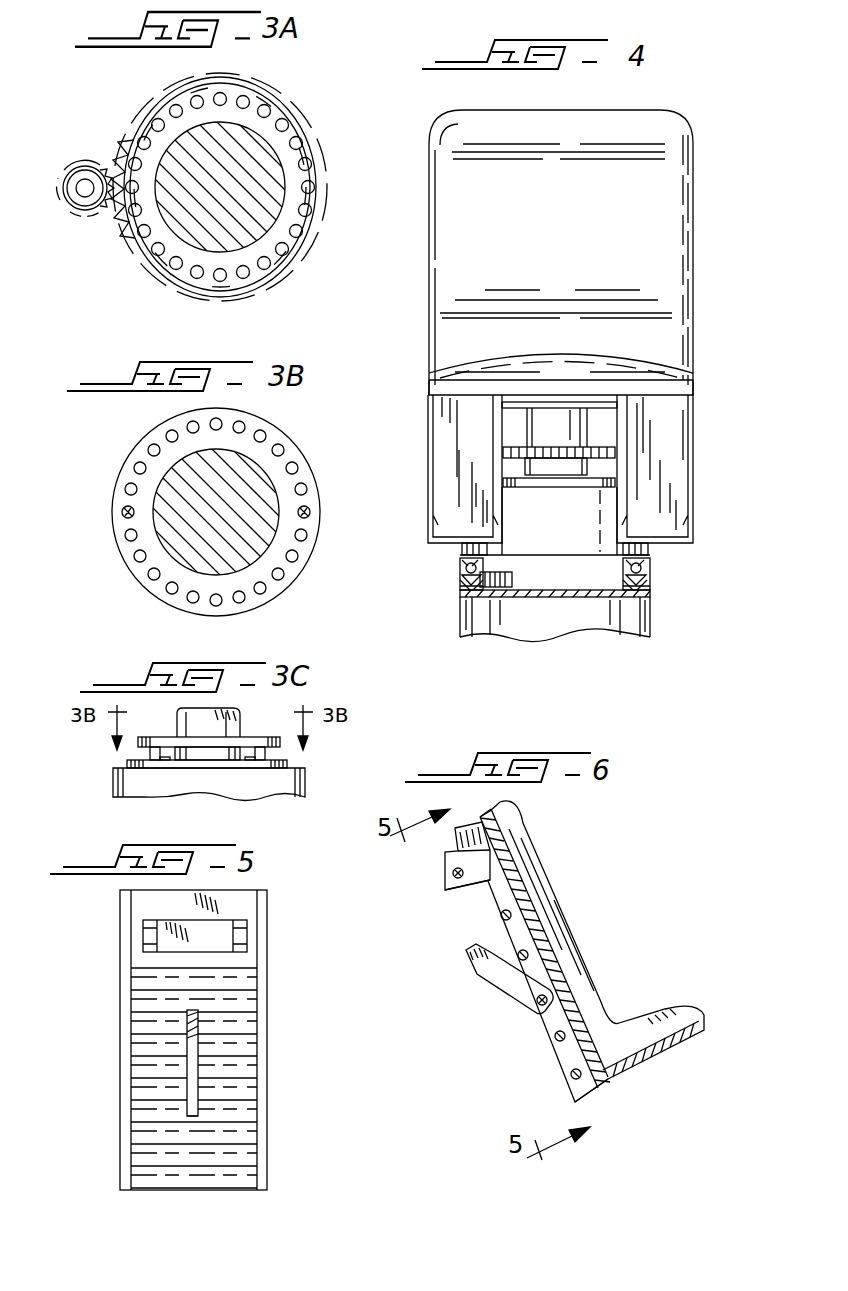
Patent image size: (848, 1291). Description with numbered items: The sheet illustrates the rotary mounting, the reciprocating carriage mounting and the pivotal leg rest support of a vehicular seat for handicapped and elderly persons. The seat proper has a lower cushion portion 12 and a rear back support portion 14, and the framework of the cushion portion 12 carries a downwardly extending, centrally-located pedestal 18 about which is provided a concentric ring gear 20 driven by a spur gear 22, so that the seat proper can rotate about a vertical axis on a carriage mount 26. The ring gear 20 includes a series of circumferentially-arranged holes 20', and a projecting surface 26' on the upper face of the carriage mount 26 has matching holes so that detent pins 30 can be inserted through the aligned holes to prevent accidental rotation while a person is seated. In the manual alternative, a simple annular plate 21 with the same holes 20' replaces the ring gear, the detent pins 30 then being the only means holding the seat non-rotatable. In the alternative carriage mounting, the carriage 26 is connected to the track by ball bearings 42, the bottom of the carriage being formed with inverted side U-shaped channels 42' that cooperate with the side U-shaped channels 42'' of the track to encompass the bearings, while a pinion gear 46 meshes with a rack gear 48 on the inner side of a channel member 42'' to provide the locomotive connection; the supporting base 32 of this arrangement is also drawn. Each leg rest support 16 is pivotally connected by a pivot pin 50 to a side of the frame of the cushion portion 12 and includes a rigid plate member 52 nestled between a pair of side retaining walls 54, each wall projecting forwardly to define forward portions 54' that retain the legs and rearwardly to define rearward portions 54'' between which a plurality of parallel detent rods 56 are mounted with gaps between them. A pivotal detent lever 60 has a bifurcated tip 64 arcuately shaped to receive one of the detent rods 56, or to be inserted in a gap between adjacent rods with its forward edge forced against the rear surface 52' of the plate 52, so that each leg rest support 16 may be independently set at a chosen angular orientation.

In FIG. 4, the lower cushion portion 12 is at (581, 374).
In FIG. 4, the rear back support portion 14 is at (572, 212).
In FIG. 4, the leg rest 16 is at (488, 433).
In FIG. 5, the leg rest 16 is at (290, 1029).
In FIG. 6, the leg rest 16 is at (600, 895).
In FIG. 3B, the pedestal 18 is at (154, 502).
In FIG. 3C, the pedestal 18 is at (240, 727).
In FIG. 4, the pedestal 18 is at (564, 434).
In FIG. 3A, the ring gear 20 is at (237, 187).
In FIG. 4, the ring gear 20 is at (560, 443).
In FIG. 3A, the circumferentially-arranged holes 20' is at (240, 178).
In FIG. 3B, the circumferentially-arranged holes 20' is at (222, 512).
In FIG. 3B, the annular plate 21 is at (294, 447).
In FIG. 3C, the annular plate 21 is at (246, 740).
In FIG. 3A, the spur gear 22 is at (68, 222).
In FIG. 3C, the carriage mount 26 is at (177, 785).
In FIG. 4, the carriage mount 26 is at (555, 521).
In FIG. 3C, the projecting surface 26' is at (168, 752).
In FIG. 4, the projecting surface 26' is at (559, 499).
In FIG. 3C, the detent pins 30 is at (146, 748).
In FIG. 4, the base plate 32 is at (651, 597).
In FIG. 4, the ball bearings 42 is at (591, 574).
In FIG. 4, the inverted side U-shaped channels 42' is at (562, 541).
In FIG. 4, the side U-shaped channels 42'' is at (561, 587).
In FIG. 4, the pinion gear 46 is at (512, 578).
In FIG. 4, the rack gear 48 is at (461, 600).
In FIG. 4, the pivot pin 50 is at (543, 628).
In FIG. 6, the pivot pin 50 is at (444, 864).
In FIG. 5, the rigid plate member 52 is at (146, 922).
In FIG. 6, the rigid plate member 52 is at (517, 800).
In FIG. 6, the rear surface 52' is at (539, 1077).
In FIG. 5, the side retaining walls 54 is at (193, 1040).
In FIG. 6, the side retaining walls 54 is at (545, 948).
In FIG. 6, the forward portions 54' is at (634, 1031).
In FIG. 6, the rearward portions 54'' is at (449, 895).
In FIG. 5, the detent rods 56 is at (230, 1103).
In FIG. 6, the detent rods 56 is at (554, 1038).
In FIG. 5, the pivotal detent lever 60 is at (190, 1078).
In FIG. 6, the pivotal detent lever 60 is at (470, 970).
In FIG. 5, the bifurcated tip 64 is at (132, 1115).
In FIG. 6, the bifurcated tip 64 is at (536, 1003).